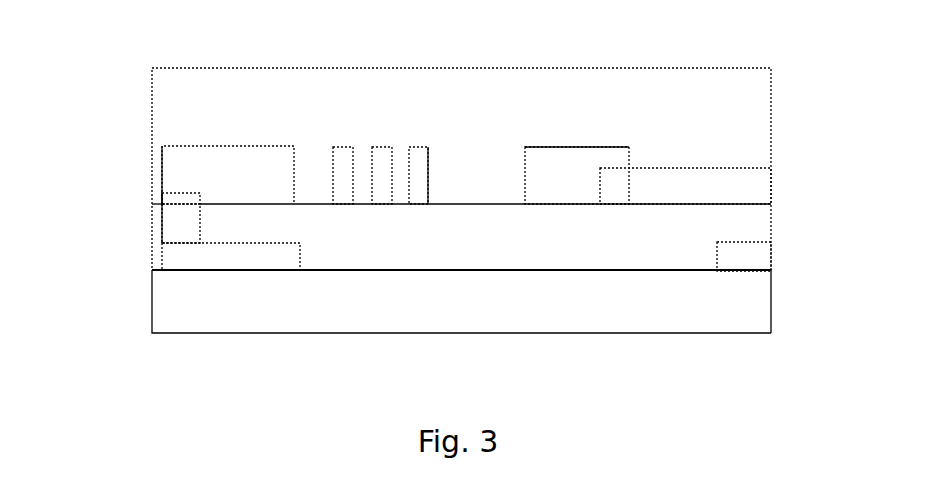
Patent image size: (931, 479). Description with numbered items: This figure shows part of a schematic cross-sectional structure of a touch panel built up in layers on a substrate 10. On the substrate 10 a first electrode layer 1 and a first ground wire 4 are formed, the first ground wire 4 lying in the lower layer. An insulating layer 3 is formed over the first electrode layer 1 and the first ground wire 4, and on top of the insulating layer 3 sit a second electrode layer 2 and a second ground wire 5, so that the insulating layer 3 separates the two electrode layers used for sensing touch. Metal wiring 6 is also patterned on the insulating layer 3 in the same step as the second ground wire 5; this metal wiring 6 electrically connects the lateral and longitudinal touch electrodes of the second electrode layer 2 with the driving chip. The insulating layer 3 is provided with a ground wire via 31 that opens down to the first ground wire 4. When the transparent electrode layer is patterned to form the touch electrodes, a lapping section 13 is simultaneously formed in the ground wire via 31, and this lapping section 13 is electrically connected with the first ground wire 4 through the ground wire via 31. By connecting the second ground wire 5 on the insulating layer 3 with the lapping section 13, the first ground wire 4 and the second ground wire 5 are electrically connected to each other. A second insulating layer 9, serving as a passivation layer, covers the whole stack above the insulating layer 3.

The first electrode layer 1 is at (757, 260).
The second electrode layer 2 is at (757, 184).
The insulating layer 3 is at (757, 228).
The first ground wire 4 is at (265, 259).
The second ground wire 5 is at (228, 156).
The metal wiring 6 is at (419, 158).
The second insulating layer 9 is at (752, 103).
The substrate 10 is at (750, 312).
The lapping section 13 is at (183, 234).
The ground wire via 31 is at (160, 217).